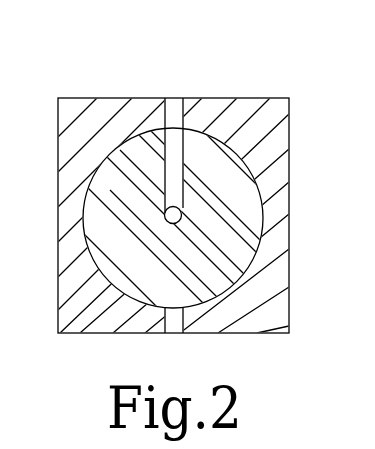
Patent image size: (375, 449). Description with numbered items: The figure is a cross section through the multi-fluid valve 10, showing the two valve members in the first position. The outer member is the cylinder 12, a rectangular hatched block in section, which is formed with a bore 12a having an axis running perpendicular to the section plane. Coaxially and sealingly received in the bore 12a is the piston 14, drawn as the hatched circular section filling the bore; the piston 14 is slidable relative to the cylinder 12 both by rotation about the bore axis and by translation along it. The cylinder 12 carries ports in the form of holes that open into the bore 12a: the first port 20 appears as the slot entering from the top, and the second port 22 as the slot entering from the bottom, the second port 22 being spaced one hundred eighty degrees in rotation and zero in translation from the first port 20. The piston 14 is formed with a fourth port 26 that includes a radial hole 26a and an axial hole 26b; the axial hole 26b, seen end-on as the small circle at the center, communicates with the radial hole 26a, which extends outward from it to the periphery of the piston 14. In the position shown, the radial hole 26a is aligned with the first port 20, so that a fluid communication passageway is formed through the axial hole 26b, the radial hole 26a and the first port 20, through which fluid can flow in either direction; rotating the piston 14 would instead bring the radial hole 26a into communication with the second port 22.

The multi-fluid valve 10 is at (78, 68).
The cylinder 12 is at (63, 293).
The bore 12a is at (106, 274).
The piston 14 is at (228, 282).
The first port 20 is at (173, 107).
The second port 22 is at (157, 327).
The fourth port 26 is at (202, 80).
The radial hole 26a is at (181, 170).
The axial hole 26b is at (182, 222).